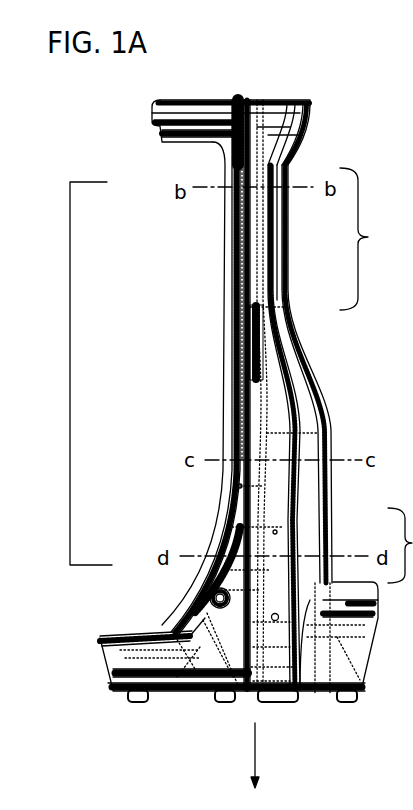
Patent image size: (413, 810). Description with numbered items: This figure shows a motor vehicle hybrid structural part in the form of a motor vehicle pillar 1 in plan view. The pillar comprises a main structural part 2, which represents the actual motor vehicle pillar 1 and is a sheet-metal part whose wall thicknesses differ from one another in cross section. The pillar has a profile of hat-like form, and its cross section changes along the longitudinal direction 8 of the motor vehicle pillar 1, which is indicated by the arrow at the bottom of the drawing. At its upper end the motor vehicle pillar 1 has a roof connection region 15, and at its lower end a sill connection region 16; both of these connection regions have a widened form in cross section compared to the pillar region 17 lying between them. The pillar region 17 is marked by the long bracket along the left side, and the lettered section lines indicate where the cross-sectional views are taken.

The motor vehicle pillar 1 is at (133, 192).
The main structural part 2 is at (222, 363).
The longitudinal direction 8 is at (265, 755).
The roof connection region 15 is at (177, 117).
The sill connection region 16 is at (133, 677).
The pillar region 17 is at (70, 390).